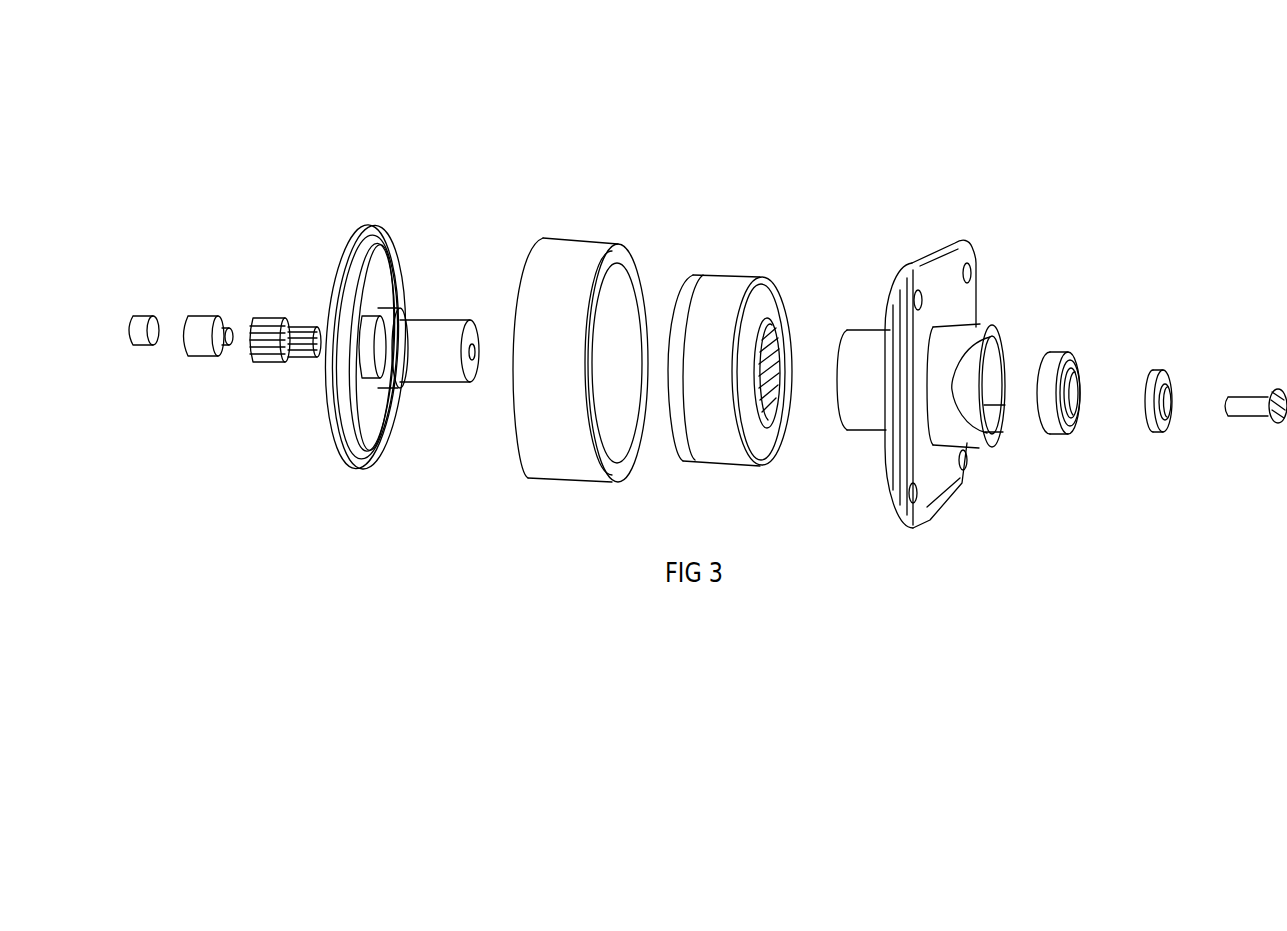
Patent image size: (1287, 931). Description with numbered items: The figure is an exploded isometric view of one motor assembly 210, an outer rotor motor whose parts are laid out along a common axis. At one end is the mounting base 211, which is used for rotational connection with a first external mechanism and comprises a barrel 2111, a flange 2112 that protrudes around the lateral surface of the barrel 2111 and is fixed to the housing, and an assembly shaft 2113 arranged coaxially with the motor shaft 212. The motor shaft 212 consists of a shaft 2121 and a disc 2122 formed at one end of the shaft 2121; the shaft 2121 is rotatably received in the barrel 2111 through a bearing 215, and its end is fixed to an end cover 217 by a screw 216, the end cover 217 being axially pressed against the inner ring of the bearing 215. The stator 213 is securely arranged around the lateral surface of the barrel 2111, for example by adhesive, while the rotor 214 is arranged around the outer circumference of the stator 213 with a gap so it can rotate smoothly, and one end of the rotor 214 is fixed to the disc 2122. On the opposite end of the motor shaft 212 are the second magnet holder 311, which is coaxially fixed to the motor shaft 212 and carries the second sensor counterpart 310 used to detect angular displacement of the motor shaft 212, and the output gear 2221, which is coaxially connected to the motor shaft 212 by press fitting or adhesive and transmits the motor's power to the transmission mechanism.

The motor assembly 210 is at (747, 45).
The mounting base 211 is at (1057, 195).
The barrel 2111 is at (867, 352).
The flange 2112 is at (945, 298).
The assembly shaft 2113 is at (973, 350).
The motor shaft 212 is at (493, 150).
The shaft 2121 is at (436, 343).
The disc 2122 is at (370, 300).
The stator 213 is at (713, 323).
The rotor 214 is at (572, 273).
The bearing 215 is at (388, 363).
The screw 216 is at (1250, 400).
The end cover 217 is at (1148, 377).
The second sensor counterpart 310 is at (140, 328).
The second magnet holder 311 is at (200, 330).
The output gear 2221 is at (267, 322).